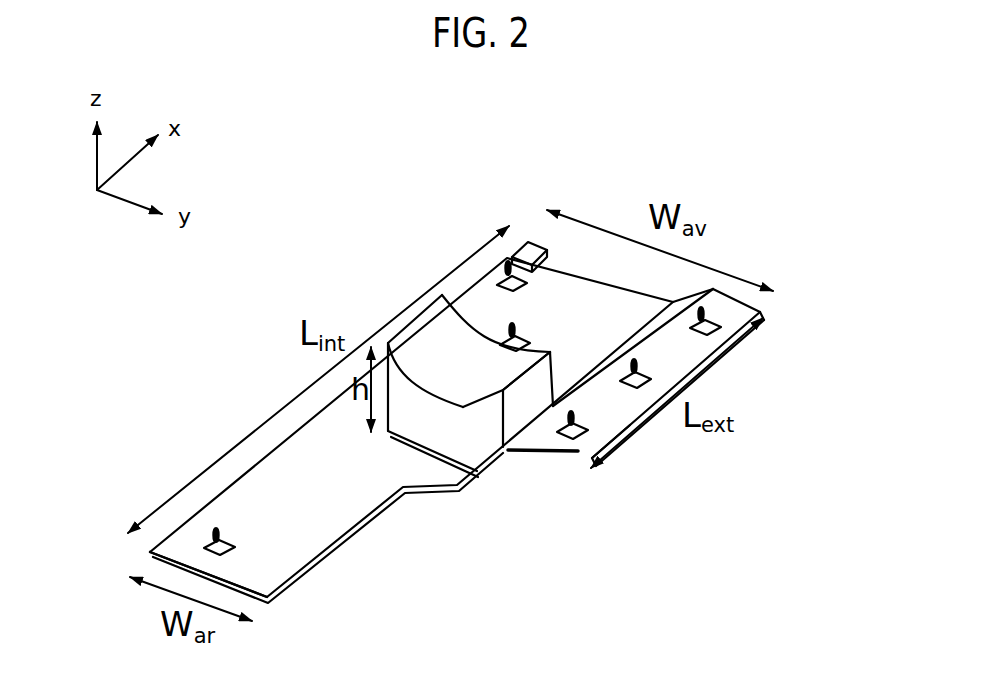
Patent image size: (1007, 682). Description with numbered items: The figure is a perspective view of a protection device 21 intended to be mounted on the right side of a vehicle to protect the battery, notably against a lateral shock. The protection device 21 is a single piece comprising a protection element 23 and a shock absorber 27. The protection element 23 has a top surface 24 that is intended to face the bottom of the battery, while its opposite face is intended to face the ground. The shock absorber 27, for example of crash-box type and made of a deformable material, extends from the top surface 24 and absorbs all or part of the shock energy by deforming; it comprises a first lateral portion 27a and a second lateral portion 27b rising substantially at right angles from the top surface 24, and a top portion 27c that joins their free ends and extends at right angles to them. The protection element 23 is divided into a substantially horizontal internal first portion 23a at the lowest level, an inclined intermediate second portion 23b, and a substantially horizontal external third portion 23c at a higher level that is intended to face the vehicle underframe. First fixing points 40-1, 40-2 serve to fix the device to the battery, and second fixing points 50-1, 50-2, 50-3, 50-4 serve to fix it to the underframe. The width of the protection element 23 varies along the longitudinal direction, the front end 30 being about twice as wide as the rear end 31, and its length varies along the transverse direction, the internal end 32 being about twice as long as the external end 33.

The protection device 21 is at (570, 169).
The protection element 23 is at (236, 497).
The first portion 23a is at (295, 460).
The second portion 23b is at (640, 338).
The third portion 23c is at (728, 308).
The top surface 24 is at (281, 543).
The shock absorber 27 is at (525, 373).
The first lateral portion 27a is at (457, 427).
The second lateral portion 27b is at (556, 392).
The top portion 27c is at (443, 333).
The front end 30 is at (550, 242).
The rear end 31 is at (150, 553).
The internal end 32 is at (282, 459).
The external end 33 is at (606, 438).
The first fixing point 40-1 is at (532, 345).
The first fixing point 40-2 is at (217, 548).
The second fixing point 50-1 is at (713, 330).
The second fixing point 50-2 is at (645, 374).
The second fixing point 50-3 is at (572, 436).
The second fixing point 50-4 is at (508, 258).